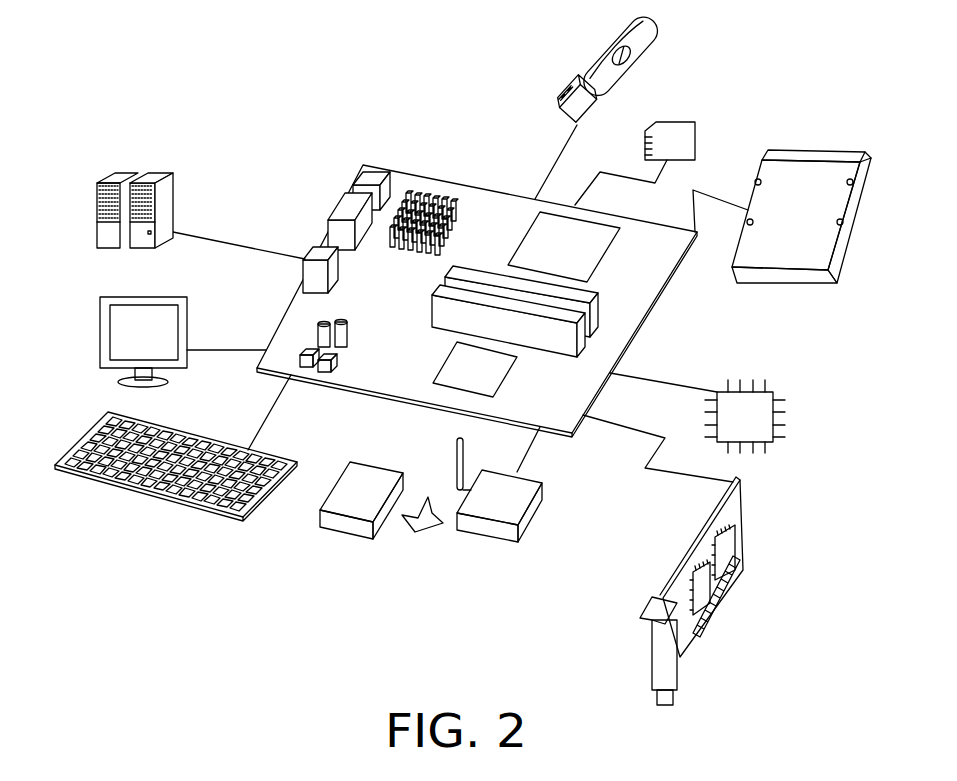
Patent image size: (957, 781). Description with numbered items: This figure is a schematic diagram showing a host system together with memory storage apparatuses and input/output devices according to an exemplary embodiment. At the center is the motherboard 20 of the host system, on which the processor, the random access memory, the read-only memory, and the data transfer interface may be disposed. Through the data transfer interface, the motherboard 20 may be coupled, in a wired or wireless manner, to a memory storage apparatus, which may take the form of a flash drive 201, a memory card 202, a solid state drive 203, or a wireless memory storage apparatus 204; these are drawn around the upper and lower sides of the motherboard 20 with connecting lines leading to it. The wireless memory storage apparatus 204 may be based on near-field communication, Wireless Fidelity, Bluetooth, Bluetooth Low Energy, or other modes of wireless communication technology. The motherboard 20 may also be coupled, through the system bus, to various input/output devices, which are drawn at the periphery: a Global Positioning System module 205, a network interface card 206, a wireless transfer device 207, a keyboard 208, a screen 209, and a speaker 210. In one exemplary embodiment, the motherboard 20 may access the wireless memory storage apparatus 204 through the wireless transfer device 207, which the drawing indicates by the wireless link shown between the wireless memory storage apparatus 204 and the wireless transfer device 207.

The motherboard 20 is at (478, 207).
The flash drive 201 is at (600, 63).
The memory card 202 is at (705, 132).
The solid state drive 203 is at (830, 152).
The wireless memory storage apparatus 204 is at (337, 477).
The Global Positioning System module 205 is at (785, 418).
The network interface card 206 is at (743, 537).
The wireless transfer device 207 is at (533, 522).
The keyboard 208 is at (178, 505).
The screen 209 is at (98, 350).
The speaker 210 is at (95, 233).